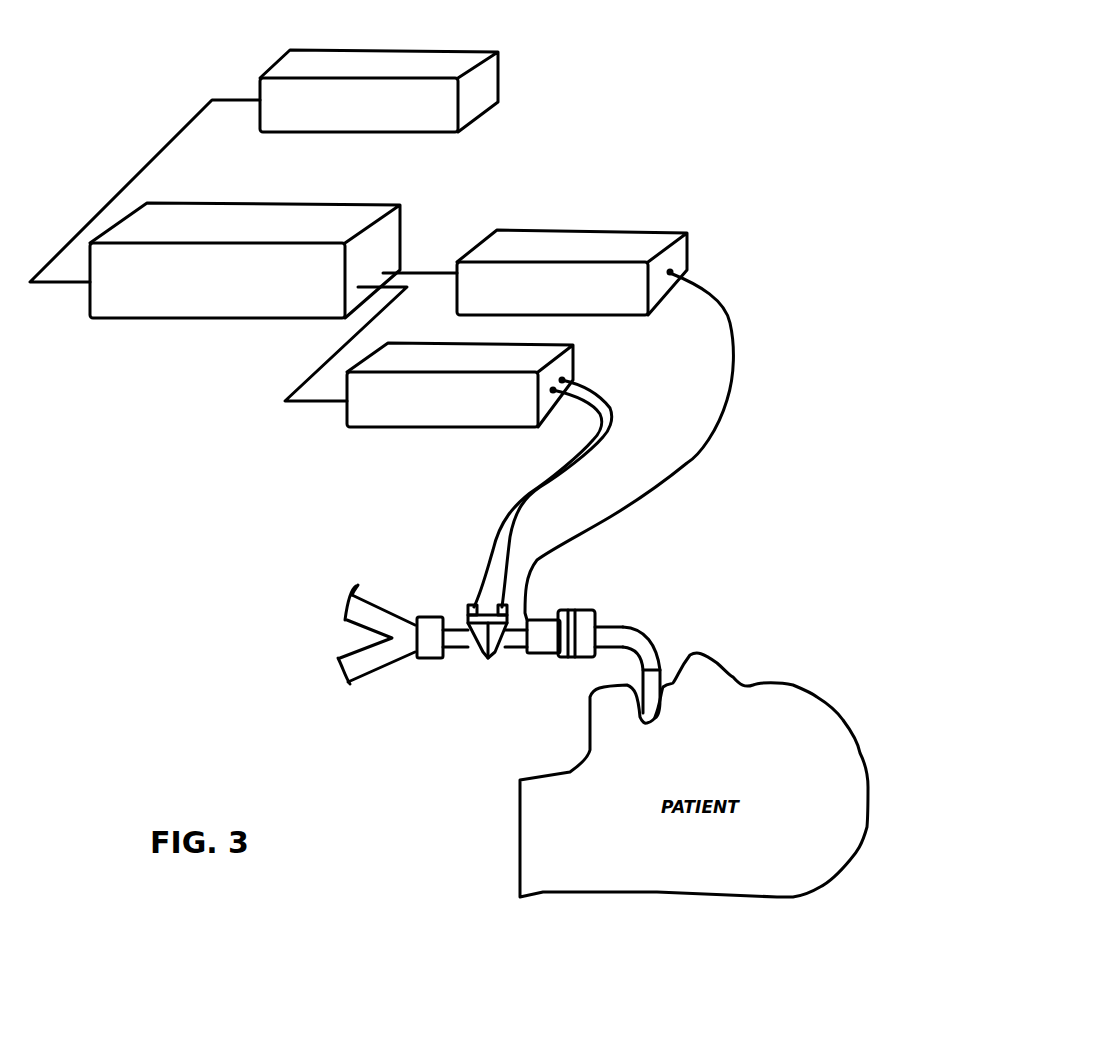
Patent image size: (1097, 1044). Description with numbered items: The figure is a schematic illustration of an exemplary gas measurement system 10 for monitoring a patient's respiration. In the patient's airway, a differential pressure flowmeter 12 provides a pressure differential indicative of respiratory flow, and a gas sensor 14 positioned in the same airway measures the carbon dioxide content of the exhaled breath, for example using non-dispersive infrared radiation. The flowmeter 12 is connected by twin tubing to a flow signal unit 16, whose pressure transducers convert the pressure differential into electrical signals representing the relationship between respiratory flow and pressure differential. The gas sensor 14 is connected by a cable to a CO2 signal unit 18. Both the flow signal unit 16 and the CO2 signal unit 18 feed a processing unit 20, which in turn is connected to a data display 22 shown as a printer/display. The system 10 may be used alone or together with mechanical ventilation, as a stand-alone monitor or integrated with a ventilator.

The gas measurement system 10 is at (736, 200).
The differential pressure flowmeter 12 is at (477, 653).
The gas sensor 14 is at (600, 627).
The flow signal unit 16 is at (383, 415).
The CO2 signal unit 18 is at (587, 243).
The processing unit 20 is at (135, 230).
The data display 22 is at (288, 67).